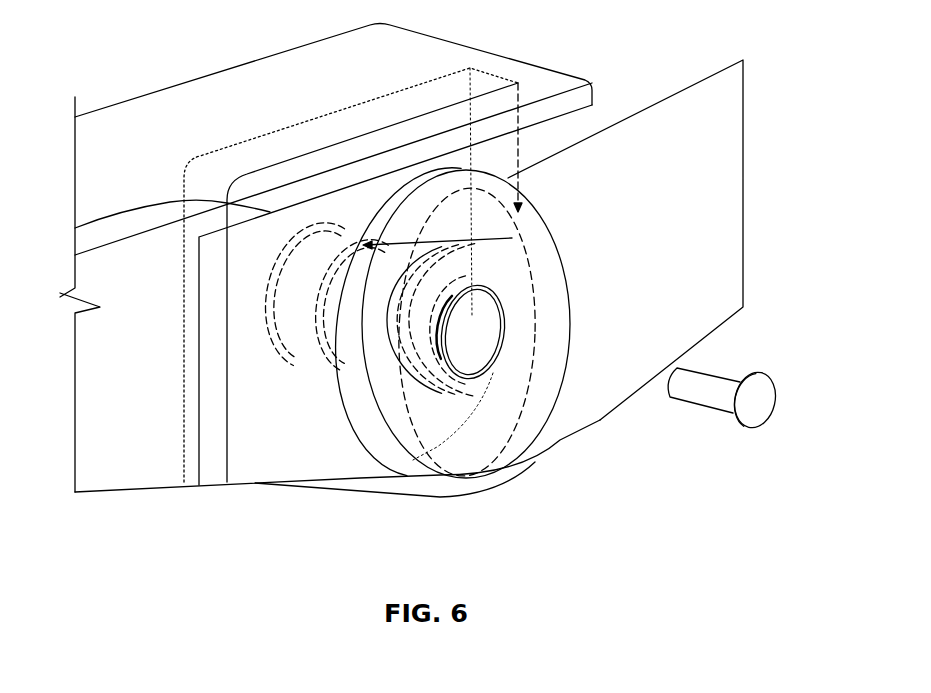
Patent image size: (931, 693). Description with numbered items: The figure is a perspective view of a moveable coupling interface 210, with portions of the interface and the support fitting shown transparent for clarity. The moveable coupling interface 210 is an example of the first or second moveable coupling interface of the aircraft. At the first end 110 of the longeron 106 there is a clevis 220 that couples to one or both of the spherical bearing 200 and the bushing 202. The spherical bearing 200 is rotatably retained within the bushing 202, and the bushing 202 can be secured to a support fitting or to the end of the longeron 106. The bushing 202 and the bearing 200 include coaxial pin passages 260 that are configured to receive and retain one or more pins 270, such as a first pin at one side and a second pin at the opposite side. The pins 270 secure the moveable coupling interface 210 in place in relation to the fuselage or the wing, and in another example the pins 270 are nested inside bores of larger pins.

The longeron 106 is at (733, 290).
The first end 110 is at (452, 485).
The spherical bearing 200 is at (518, 170).
The bushing 202 is at (520, 213).
The moveable coupling interface 210 is at (333, 510).
The clevis 220 is at (412, 455).
The pin passages 260 is at (483, 335).
The pin 270 is at (715, 383).